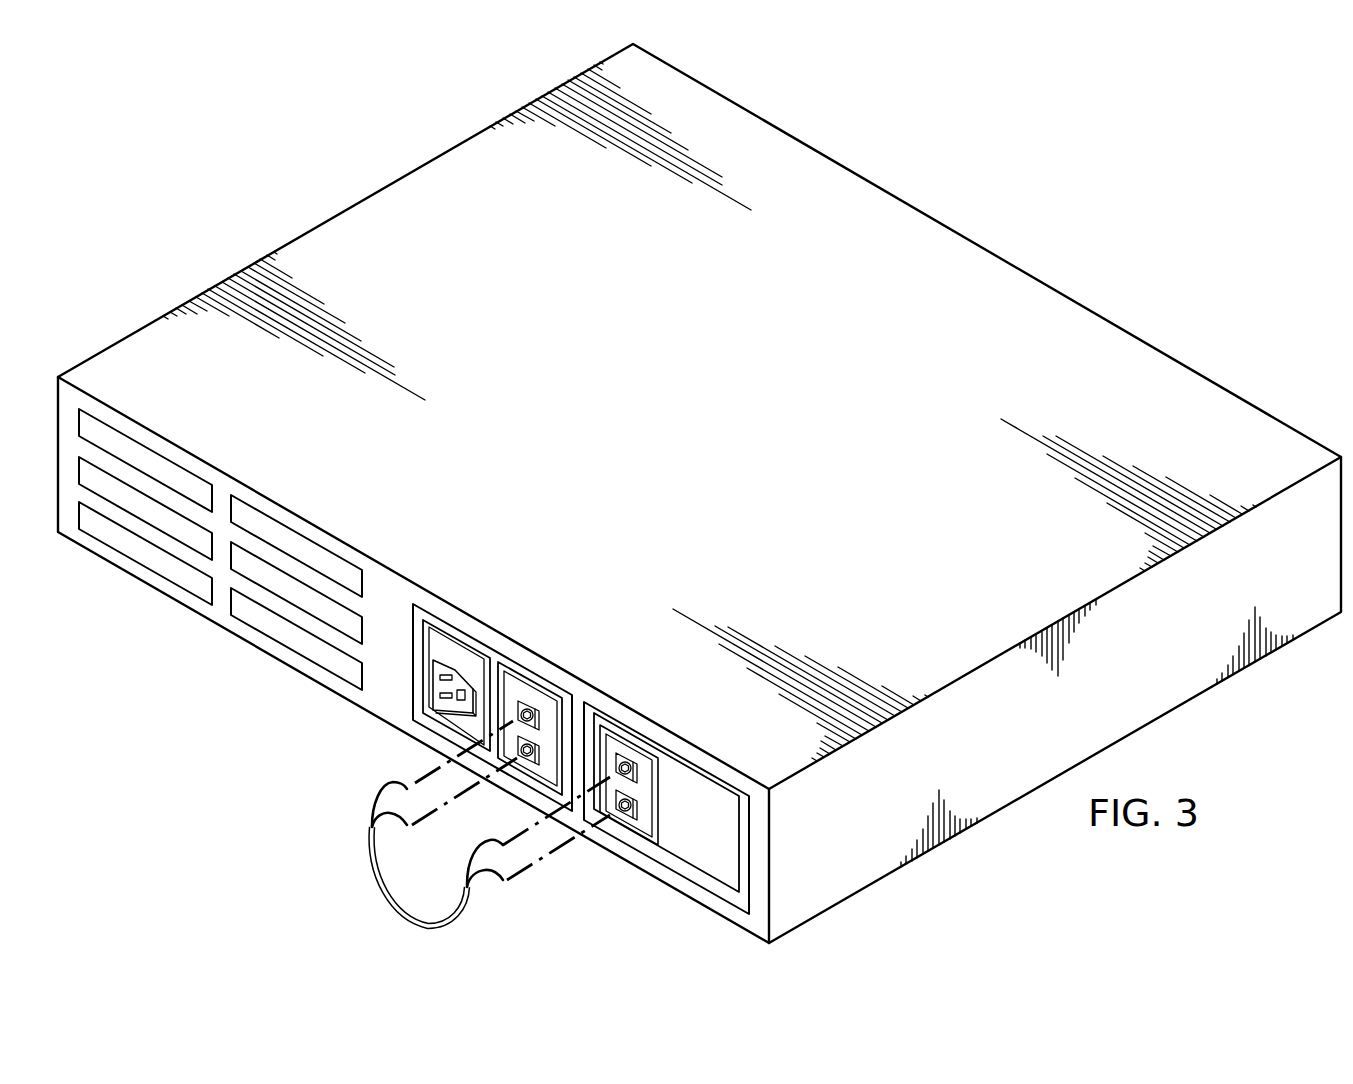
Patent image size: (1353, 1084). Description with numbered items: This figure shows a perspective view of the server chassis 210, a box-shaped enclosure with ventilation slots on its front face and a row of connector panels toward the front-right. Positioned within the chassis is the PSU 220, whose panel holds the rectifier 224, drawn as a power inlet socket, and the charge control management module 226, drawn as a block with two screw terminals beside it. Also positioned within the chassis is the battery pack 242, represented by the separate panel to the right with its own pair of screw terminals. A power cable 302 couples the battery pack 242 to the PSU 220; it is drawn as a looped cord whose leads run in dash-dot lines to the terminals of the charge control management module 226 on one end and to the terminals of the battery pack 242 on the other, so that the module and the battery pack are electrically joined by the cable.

The server chassis 210 is at (238, 140).
The PSU 220 is at (401, 688).
The rectifier 224 is at (434, 726).
The charge control management module 226 is at (520, 779).
The battery pack 242 is at (638, 860).
The power cable 302 is at (393, 915).